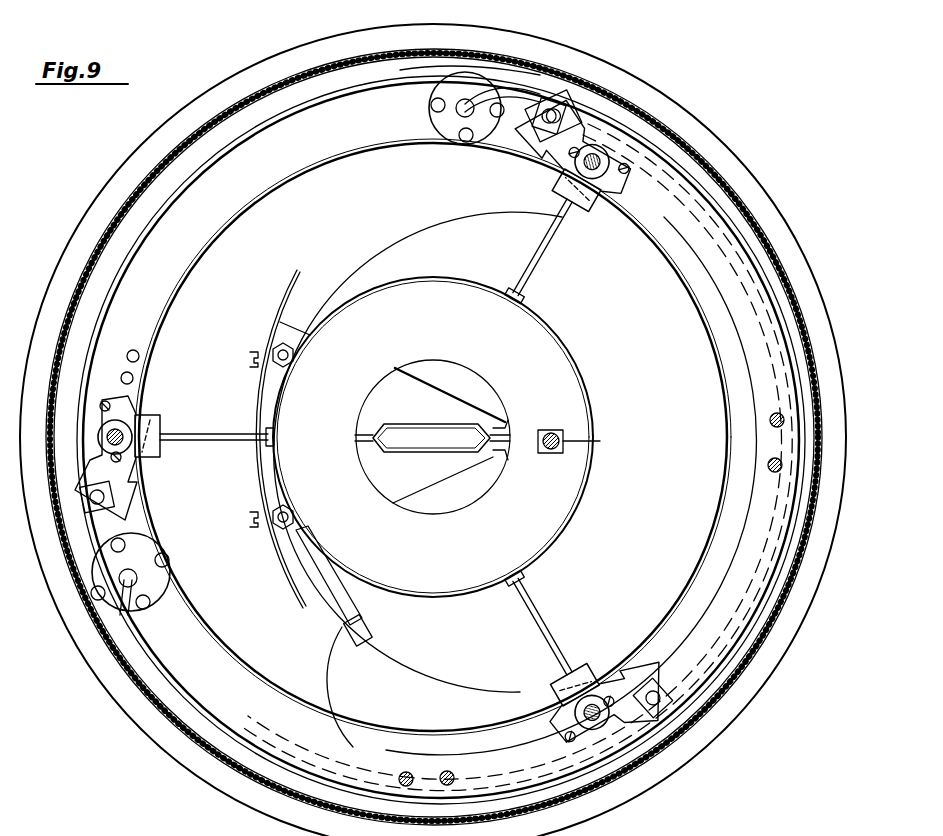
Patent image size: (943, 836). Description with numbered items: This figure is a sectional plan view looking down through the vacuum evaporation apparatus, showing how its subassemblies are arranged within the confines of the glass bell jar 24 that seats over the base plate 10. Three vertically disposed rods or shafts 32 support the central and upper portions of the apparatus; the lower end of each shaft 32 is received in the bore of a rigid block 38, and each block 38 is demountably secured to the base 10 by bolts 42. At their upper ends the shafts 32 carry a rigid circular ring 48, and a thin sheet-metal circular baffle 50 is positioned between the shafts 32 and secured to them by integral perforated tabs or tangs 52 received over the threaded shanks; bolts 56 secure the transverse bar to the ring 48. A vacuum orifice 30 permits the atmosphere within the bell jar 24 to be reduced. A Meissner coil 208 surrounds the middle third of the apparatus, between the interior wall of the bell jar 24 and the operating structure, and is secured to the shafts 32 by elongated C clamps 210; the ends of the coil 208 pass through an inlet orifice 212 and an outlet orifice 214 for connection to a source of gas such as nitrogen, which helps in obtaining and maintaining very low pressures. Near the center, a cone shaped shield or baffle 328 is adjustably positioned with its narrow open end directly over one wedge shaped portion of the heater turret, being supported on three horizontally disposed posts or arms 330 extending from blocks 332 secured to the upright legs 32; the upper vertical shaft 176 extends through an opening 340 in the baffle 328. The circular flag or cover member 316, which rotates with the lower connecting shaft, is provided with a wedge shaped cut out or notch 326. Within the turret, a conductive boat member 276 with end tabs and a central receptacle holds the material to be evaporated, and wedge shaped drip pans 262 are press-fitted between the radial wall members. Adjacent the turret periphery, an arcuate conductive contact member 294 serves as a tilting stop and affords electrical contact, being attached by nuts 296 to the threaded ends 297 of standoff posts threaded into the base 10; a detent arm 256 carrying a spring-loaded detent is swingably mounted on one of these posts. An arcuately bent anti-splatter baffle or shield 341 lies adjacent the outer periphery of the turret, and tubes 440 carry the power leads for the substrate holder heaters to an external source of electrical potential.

The base plate 10 is at (78, 655).
The glass bell jar 24 is at (738, 186).
The vacuum orifice 30 is at (328, 683).
The rods or shafts 32 is at (120, 436).
The rigid block 38 is at (128, 475).
The bolts 42 is at (110, 404).
The rigid circular ring 48 is at (735, 310).
The circular baffle 50 is at (318, 160).
The perforated tabs or tangs 52 is at (598, 200).
The bolts 56 is at (768, 464).
The upper vertical shaft 176 is at (602, 440).
The Meissner coil 208 is at (262, 122).
The elongated C clamps 210 is at (112, 500).
The inlet orifice 212 is at (428, 106).
The outlet orifice 214 is at (170, 577).
The detent arm 256 is at (328, 600).
The wedge shaped drip pans 262 is at (392, 477).
The conductive boat member 276 is at (392, 428).
The arcuate conductive contact member 294 is at (282, 330).
The nuts 296 is at (270, 353).
The threaded ends 297 is at (276, 528).
The circular flag or cover member 316 is at (414, 230).
The wedge shaped cut out or notch 326 is at (430, 382).
The cone shaped shield or baffle 328 is at (590, 513).
The horizontally disposed posts or arms 330 is at (226, 432).
The blocks 332 is at (155, 445).
The opening 340 is at (546, 428).
The anti-splatter baffle or shield 341 is at (290, 285).
The tubes 440 is at (128, 372).